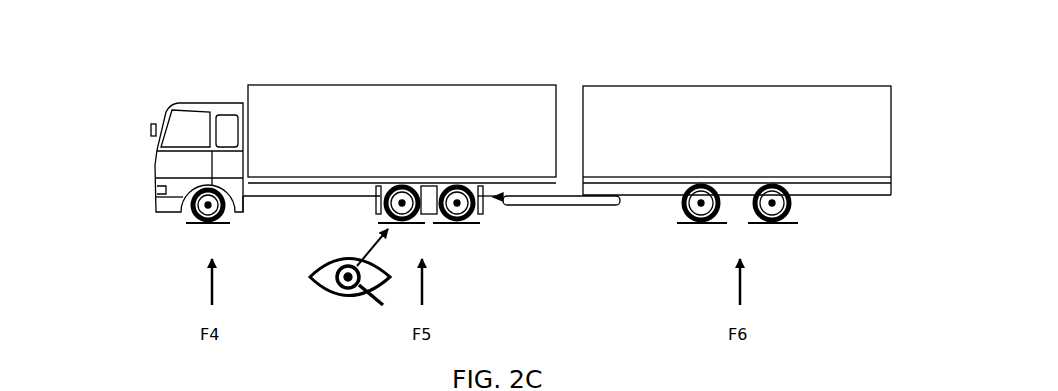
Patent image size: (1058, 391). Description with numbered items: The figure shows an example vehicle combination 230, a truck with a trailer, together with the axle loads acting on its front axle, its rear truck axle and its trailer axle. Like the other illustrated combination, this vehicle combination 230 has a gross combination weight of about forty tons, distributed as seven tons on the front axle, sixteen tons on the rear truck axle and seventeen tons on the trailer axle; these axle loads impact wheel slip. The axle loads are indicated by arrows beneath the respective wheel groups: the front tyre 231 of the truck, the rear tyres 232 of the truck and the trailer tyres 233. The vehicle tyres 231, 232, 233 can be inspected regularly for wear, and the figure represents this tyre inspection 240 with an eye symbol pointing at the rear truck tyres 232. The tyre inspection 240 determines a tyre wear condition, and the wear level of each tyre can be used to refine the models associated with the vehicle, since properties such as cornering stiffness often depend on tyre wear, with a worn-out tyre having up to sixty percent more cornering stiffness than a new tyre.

The vehicle combination 230 is at (136, 58).
The vehicle tyre 231 is at (225, 218).
The vehicle tyre 232 is at (470, 218).
The vehicle tyre 233 is at (787, 218).
The tyre inspection 240 is at (350, 276).